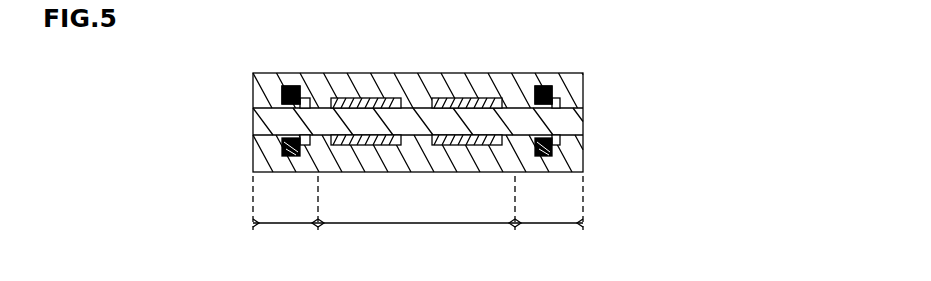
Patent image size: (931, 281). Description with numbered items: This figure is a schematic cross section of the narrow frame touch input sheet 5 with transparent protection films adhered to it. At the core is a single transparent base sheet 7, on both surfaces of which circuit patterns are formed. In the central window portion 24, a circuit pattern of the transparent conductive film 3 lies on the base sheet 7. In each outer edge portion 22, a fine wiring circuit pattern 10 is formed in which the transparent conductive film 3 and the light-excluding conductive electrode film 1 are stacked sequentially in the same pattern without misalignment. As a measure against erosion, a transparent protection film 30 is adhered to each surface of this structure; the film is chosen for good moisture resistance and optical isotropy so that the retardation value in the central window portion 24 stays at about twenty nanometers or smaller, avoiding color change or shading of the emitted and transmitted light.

The light-excluding conductive electrode film 1 is at (552, 93).
The transparent conductive film 3 is at (379, 98).
The narrow frame touch input sheet 5 is at (210, 73).
The base sheet 7 is at (583, 130).
The fine wiring circuit pattern 10 is at (289, 80).
The outer edge portion 22 is at (418, 214).
The central window portion 24 is at (416, 235).
The transparent protection film 30 is at (331, 73).